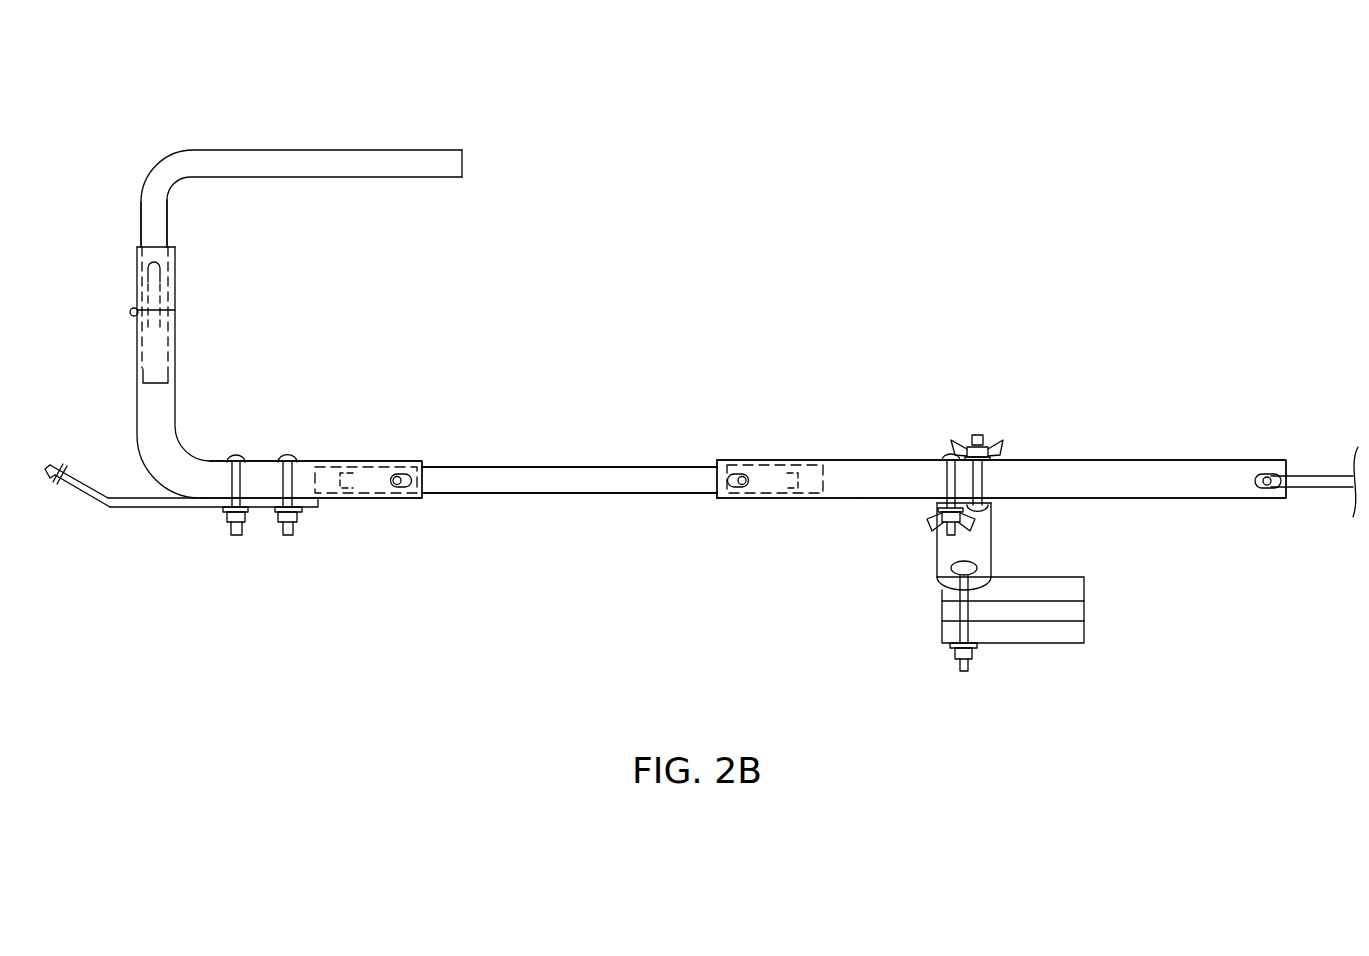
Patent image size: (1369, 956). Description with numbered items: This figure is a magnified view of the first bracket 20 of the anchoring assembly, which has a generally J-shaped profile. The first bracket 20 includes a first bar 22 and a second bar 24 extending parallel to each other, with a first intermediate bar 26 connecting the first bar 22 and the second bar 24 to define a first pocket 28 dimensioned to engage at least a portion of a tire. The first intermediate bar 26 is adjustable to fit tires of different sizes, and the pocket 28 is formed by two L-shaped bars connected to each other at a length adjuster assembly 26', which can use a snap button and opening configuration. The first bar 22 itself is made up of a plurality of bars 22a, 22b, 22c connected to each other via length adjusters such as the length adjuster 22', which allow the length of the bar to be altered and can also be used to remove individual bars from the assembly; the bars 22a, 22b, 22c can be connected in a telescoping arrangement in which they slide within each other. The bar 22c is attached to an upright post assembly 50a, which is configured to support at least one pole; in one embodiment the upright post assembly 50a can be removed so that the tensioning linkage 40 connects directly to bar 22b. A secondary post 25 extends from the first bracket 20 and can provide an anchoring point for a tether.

The first bracket 20 is at (584, 509).
The first bar 22 is at (744, 533).
The length adjuster 22' is at (312, 433).
The bar 22a is at (261, 482).
The bar 22b is at (638, 483).
The bar 22c is at (1112, 482).
The second bar 24 is at (397, 165).
The secondary post 25 is at (73, 492).
The first intermediate bar 26 is at (129, 355).
The length adjuster assembly 26' is at (209, 296).
The first pocket 28 is at (288, 325).
The tensioning linkage 40 is at (1323, 475).
The upright post assembly 50a is at (975, 543).